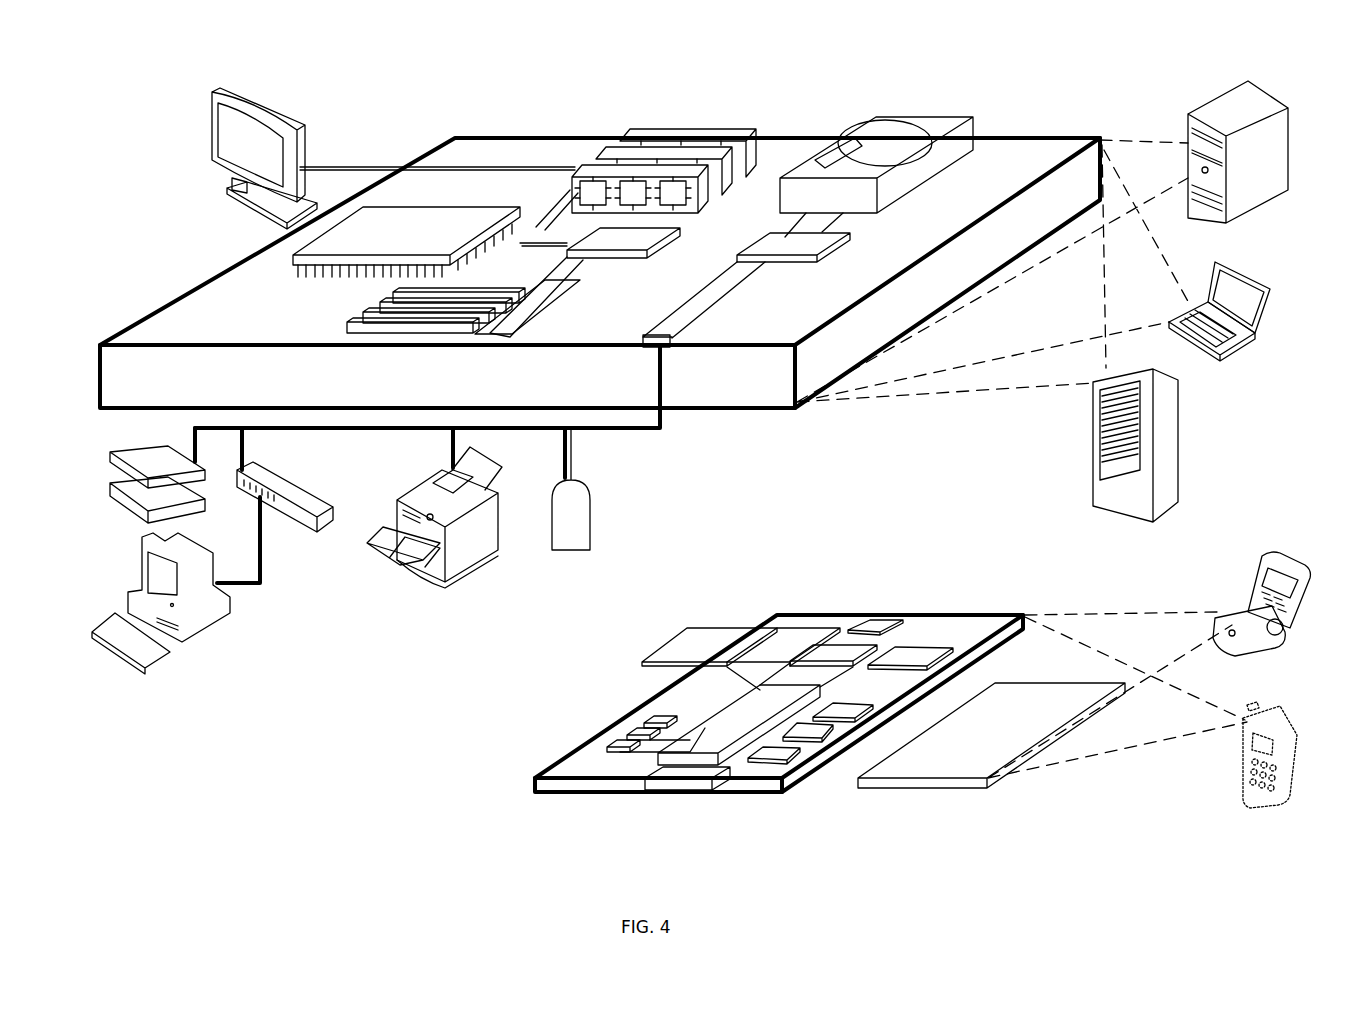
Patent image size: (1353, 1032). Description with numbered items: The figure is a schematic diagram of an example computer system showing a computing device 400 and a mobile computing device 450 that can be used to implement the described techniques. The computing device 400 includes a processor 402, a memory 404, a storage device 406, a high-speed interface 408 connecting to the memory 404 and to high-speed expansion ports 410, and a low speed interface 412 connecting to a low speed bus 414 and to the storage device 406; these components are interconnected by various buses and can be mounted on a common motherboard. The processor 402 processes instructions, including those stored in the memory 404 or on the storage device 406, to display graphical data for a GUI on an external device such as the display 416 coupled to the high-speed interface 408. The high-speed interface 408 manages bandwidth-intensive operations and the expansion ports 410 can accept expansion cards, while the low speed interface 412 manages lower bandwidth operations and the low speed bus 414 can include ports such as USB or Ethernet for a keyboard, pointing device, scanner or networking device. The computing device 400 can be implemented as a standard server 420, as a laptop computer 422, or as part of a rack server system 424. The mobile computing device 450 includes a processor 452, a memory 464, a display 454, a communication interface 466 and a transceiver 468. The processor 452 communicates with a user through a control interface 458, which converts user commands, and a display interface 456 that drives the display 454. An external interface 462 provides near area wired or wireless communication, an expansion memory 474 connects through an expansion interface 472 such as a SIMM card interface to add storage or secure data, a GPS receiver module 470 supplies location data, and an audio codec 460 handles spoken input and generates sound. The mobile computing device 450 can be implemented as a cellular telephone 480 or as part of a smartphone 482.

The computing device 400 is at (402, 62).
The processor 402 is at (293, 263).
The memory 404 is at (640, 133).
The storage device 406 is at (868, 115).
The high-speed interface 408 is at (600, 243).
The high-speed expansion ports 410 is at (367, 308).
The low speed interface 412 is at (793, 245).
The low speed bus 414 is at (668, 345).
The display 416 is at (213, 94).
The standard server 420 is at (1190, 125).
The laptop computer 422 is at (1216, 266).
The rack server system 424 is at (1094, 472).
The mobile computing device 450 is at (762, 592).
The processor 452 is at (710, 765).
The display 454 is at (990, 780).
The display interface 456 is at (795, 765).
The control interface 458 is at (835, 740).
The audio codec 460 is at (845, 720).
The external interface 462 is at (676, 778).
The memory 464 is at (630, 740).
The communication interface 466 is at (835, 655).
The transceiver 468 is at (908, 655).
The GPS receiver module 470 is at (882, 622).
The expansion interface 472 is at (755, 628).
The expansion memory 474 is at (690, 628).
The cellular telephone 480 is at (1272, 557).
The smartphone 482 is at (1250, 698).